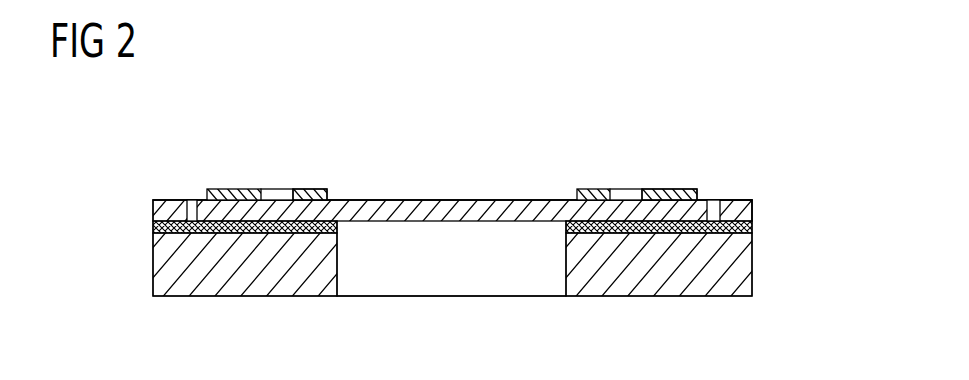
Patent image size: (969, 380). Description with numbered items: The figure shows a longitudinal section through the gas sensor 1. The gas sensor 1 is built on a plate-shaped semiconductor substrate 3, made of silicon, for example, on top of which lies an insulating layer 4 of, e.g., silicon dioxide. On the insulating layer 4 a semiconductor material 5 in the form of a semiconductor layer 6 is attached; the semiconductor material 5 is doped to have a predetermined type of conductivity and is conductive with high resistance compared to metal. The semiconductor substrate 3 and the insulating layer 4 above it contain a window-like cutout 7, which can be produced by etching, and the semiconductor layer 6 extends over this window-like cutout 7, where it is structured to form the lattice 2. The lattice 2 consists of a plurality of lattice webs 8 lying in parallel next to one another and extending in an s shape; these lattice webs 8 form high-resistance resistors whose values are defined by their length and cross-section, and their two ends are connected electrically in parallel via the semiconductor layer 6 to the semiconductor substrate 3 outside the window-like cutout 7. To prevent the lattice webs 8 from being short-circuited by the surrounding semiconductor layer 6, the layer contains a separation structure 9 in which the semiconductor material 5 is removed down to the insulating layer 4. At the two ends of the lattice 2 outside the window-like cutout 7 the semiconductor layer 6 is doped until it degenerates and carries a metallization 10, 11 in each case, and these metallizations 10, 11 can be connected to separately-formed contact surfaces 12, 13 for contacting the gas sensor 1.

The gas sensor 1 is at (531, 108).
The lattice 2 is at (401, 181).
The semiconductor substrate 3 is at (742, 262).
The insulating layer 4 is at (752, 227).
The semiconductor material 5 is at (745, 200).
The semiconductor layer 6 is at (745, 200).
The window-like cutout 7 is at (450, 284).
The lattice webs 8 is at (468, 200).
The separation structure 9 is at (191, 199).
The metallization 10 is at (313, 188).
The metallization 11 is at (595, 189).
The contact surface 12 is at (233, 188).
The contact surface 13 is at (670, 188).